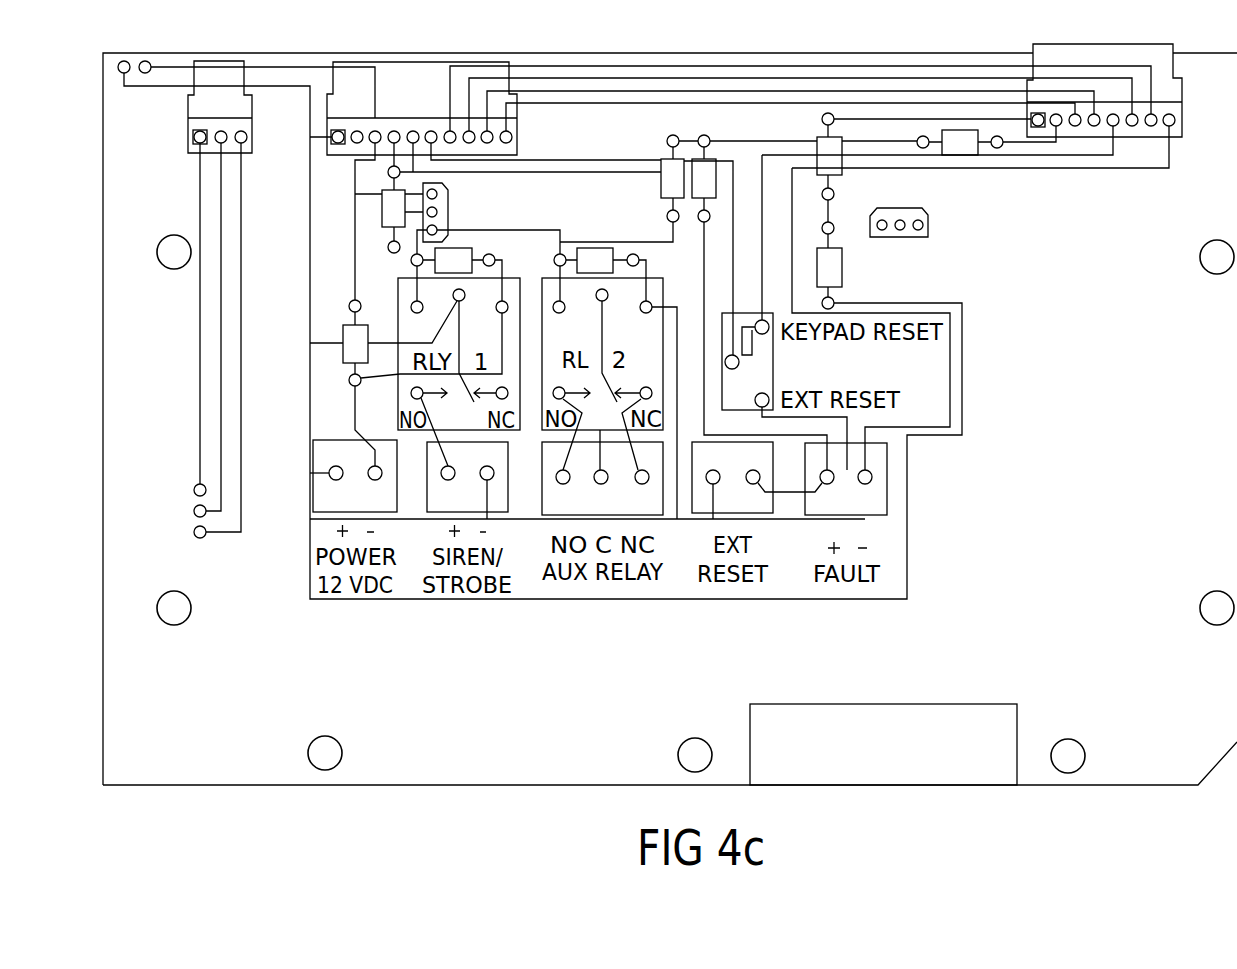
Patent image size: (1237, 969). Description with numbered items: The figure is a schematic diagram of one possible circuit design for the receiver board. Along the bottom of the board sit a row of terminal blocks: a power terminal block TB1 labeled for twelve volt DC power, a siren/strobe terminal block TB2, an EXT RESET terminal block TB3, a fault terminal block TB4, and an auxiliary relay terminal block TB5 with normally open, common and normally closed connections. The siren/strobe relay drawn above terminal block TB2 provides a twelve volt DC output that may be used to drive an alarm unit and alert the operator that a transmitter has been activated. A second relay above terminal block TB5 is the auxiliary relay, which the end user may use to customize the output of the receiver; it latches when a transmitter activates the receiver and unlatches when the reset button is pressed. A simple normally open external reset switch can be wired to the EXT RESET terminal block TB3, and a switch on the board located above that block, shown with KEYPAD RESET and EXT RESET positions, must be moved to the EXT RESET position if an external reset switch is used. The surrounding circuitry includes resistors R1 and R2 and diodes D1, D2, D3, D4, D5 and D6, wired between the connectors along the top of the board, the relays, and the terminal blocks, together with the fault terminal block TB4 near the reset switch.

The resistor R1 is at (612, 182).
The resistor R2 is at (986, 141).
The diode D1 is at (355, 343).
The diode D2 is at (462, 274).
The diode D3 is at (606, 274).
The diode D4 is at (673, 178).
The diode D5 is at (704, 178).
The diode D6 is at (829, 267).
The power terminal block TB1 is at (353, 476).
The siren/strobe terminal block TB2 is at (467, 480).
The EXT RESET terminal block TB3 is at (757, 480).
The fault terminal block TB4 is at (846, 479).
The auxiliary relay terminal block TB5 is at (602, 478).